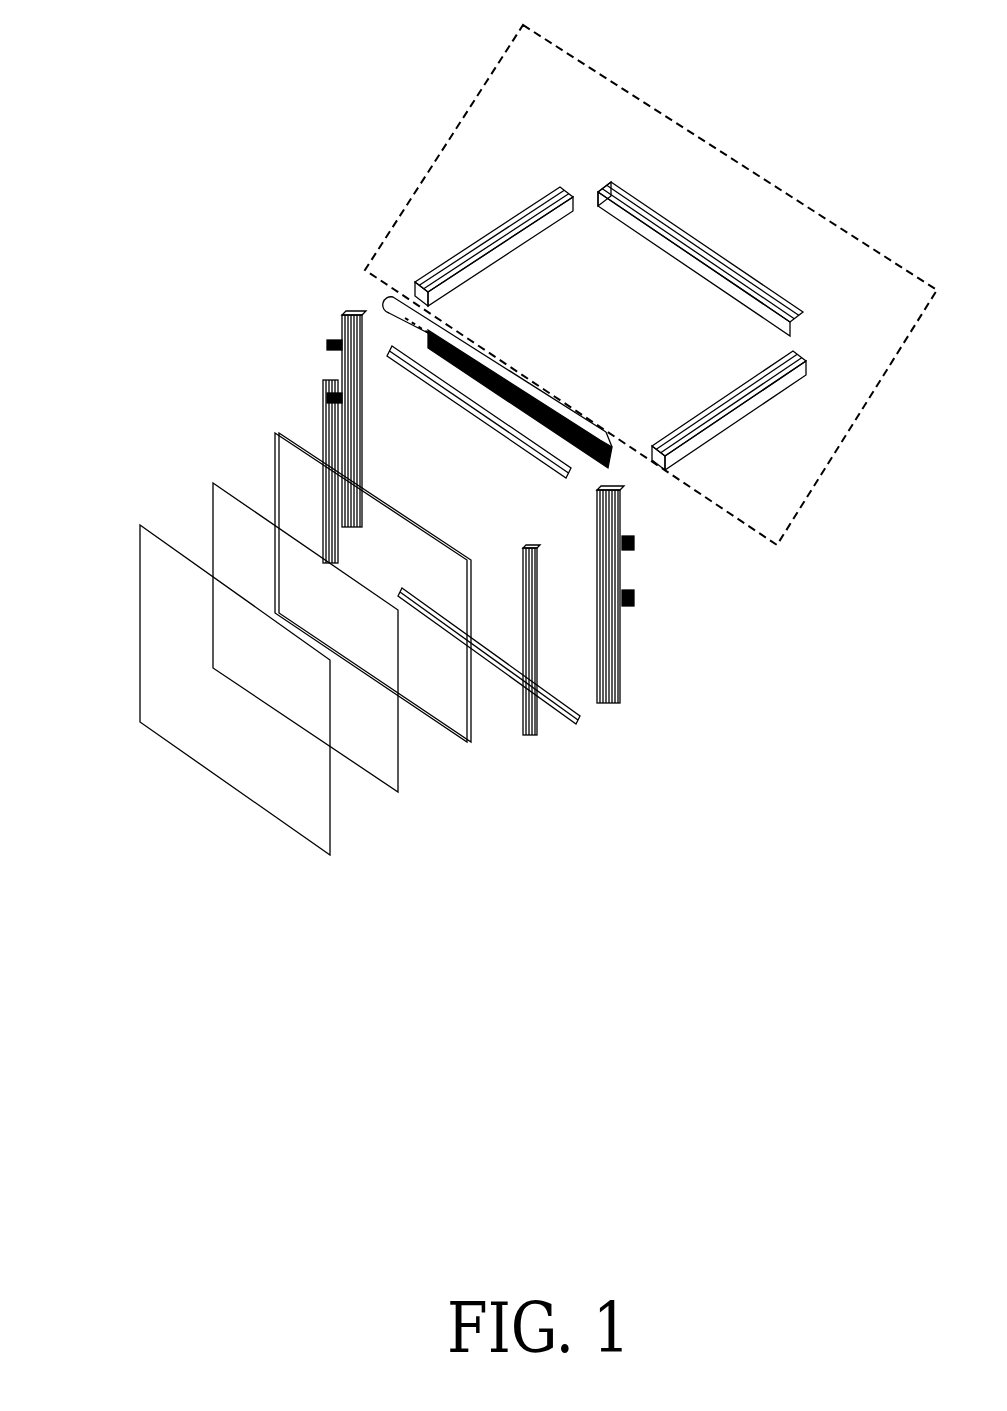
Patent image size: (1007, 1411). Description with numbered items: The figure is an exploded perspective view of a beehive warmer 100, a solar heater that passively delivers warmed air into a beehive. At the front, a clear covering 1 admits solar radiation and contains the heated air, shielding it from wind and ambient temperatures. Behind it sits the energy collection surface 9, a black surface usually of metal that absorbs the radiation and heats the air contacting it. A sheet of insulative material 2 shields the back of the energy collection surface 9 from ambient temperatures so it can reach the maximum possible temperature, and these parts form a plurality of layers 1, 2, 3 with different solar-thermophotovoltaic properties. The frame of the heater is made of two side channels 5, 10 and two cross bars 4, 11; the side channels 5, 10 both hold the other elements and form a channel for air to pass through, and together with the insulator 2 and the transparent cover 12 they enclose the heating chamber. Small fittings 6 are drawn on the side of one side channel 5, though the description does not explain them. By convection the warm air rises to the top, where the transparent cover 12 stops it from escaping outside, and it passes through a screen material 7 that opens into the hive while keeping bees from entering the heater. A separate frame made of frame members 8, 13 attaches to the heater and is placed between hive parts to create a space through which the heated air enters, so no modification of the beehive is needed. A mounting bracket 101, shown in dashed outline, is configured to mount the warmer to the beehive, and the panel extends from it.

The beehive warmer 100 is at (178, 55).
The mounting bracket 101 is at (720, 155).
The clear covering 1 is at (348, 867).
The sheet of insulative material 2 is at (467, 745).
The layer 3 is at (542, 742).
The cross bar 4 is at (587, 723).
The side channel 5 is at (623, 697).
The clips 6 is at (630, 550).
The screen material 7 is at (608, 467).
The frame member 8 is at (812, 347).
The energy collection surface 9 is at (192, 498).
The side channel 10 is at (338, 315).
The cross bar 11 is at (392, 347).
The transparent cover 12 is at (385, 292).
The frame member 13 is at (445, 235).